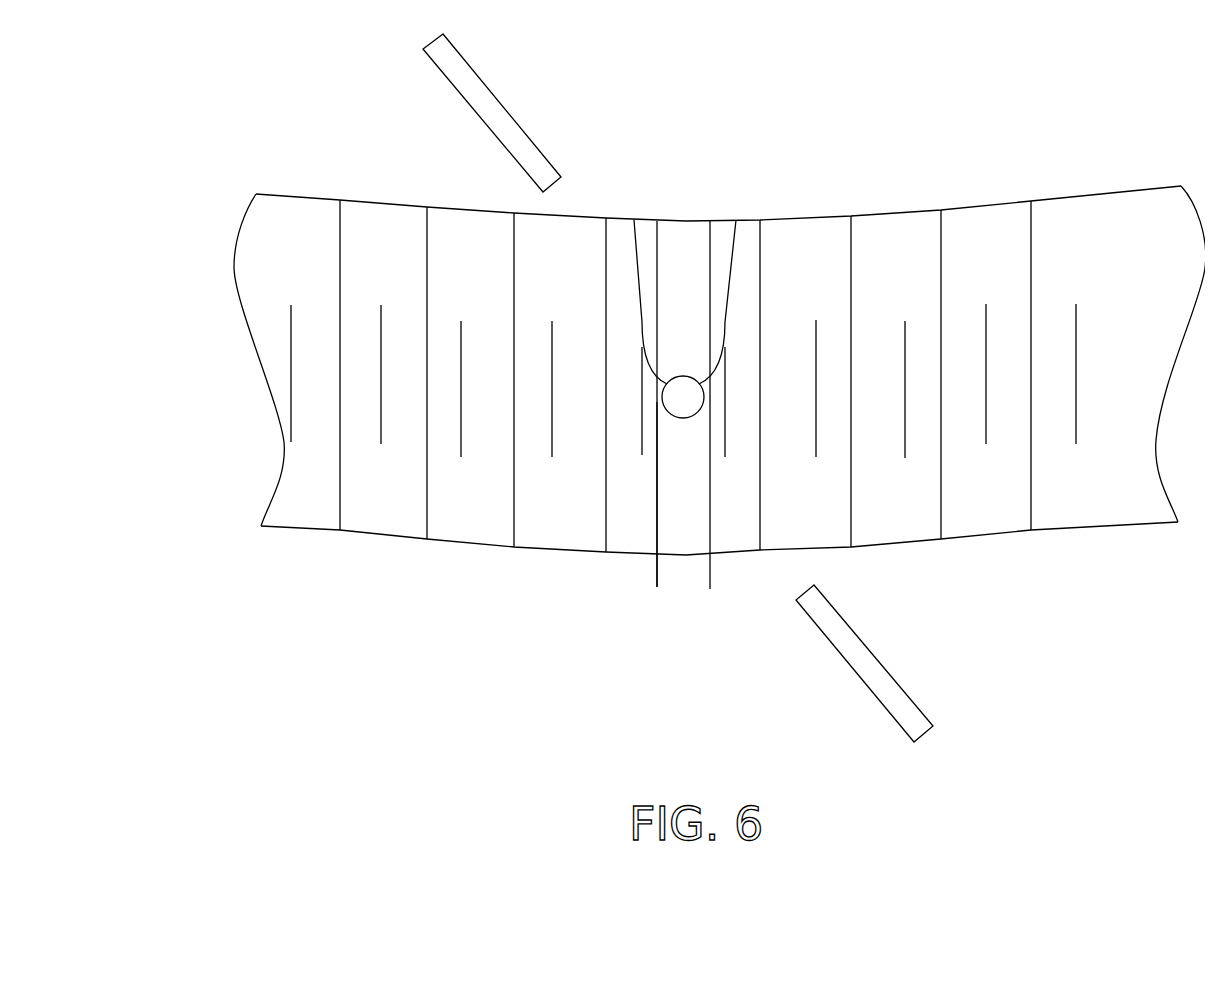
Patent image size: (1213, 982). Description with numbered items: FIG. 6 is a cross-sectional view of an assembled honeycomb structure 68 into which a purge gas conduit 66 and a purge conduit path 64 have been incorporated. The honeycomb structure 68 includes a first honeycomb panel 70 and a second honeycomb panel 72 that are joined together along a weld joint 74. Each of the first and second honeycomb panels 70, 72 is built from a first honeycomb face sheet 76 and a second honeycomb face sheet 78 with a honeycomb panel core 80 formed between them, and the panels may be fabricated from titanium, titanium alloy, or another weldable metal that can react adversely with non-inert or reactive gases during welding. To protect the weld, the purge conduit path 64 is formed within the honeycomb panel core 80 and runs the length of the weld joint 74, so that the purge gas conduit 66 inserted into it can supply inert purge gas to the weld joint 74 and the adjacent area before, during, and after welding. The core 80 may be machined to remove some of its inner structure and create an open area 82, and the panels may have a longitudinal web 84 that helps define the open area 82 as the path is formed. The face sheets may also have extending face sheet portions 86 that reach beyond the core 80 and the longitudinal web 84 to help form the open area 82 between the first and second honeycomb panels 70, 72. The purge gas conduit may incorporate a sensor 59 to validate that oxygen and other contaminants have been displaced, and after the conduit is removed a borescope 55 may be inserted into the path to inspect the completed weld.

The borescope 55 is at (853, 670).
The sensor 59 is at (502, 100).
The purge conduit path 64 is at (725, 320).
The purge gas conduit 66 is at (640, 320).
The honeycomb structure 68 is at (258, 102).
The first honeycomb panel 70 is at (296, 192).
The second honeycomb panel 72 is at (975, 206).
The weld joint 74 is at (682, 218).
The first honeycomb face sheet 76 is at (468, 204).
The second honeycomb face sheet 78 is at (927, 542).
The honeycomb panel core 80 is at (380, 258).
The open area 82 is at (695, 240).
The longitudinal web 84 is at (655, 517).
The extending face sheet portion 86 is at (660, 218).